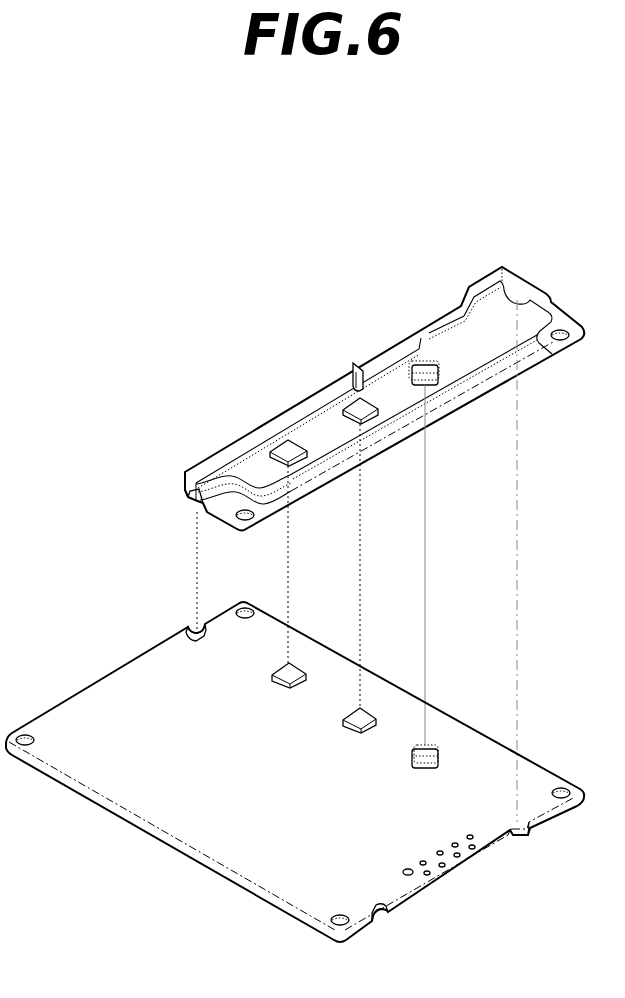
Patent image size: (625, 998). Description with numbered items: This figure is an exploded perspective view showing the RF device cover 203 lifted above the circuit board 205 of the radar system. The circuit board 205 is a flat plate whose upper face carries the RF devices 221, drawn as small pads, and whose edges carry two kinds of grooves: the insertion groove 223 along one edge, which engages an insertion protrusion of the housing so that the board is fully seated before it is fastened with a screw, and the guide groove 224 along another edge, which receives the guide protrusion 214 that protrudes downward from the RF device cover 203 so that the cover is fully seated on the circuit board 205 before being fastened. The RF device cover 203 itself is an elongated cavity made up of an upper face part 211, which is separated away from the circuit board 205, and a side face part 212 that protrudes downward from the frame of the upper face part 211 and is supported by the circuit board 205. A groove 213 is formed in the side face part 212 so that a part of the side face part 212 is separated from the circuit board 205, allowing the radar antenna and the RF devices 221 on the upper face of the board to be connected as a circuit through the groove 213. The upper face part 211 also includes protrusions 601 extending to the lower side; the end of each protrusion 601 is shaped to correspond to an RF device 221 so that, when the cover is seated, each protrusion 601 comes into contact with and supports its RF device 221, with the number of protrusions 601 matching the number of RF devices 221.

The RF device cover 203 is at (534, 250).
The circuit board 205 is at (78, 664).
The upper face part 211 is at (470, 350).
The side face part 212 is at (230, 447).
The groove 213 is at (356, 362).
The guide protrusion 214 is at (195, 506).
The RF device 221 is at (295, 667).
The insertion groove 223 is at (380, 915).
The guide groove 224 is at (190, 628).
The protrusion 601 is at (406, 378).